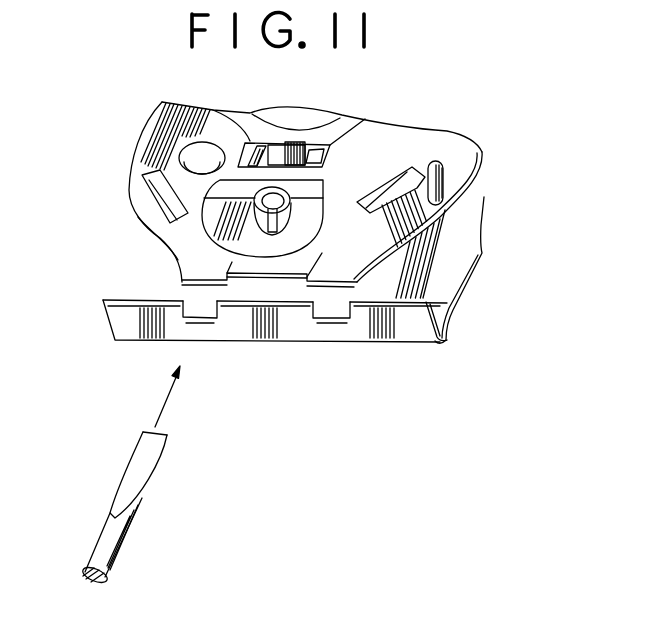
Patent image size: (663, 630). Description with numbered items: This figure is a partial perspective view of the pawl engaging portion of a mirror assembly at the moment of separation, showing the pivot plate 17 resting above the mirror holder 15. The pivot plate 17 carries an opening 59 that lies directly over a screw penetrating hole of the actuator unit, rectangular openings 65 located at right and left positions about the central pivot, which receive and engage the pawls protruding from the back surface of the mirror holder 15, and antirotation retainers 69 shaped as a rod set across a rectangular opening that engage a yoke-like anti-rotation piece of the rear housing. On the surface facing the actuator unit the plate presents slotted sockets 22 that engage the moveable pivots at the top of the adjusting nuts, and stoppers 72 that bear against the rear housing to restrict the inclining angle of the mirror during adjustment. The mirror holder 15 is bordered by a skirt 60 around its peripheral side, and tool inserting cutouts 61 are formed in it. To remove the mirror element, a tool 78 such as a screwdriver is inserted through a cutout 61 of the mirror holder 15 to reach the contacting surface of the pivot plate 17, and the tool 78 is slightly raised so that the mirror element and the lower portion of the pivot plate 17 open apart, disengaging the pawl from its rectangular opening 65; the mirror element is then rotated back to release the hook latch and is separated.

The mirror holder 15 is at (441, 284).
The pivot plate 17 is at (449, 129).
The socket 22 is at (297, 203).
The opening 59 is at (183, 158).
The skirt 60 is at (410, 330).
The tool inserting cutout 61 is at (203, 308).
The rectangular opening 65 is at (163, 195).
The antirotation retainer 69 is at (312, 162).
The stopper 72 is at (444, 182).
The tool 78 is at (113, 530).